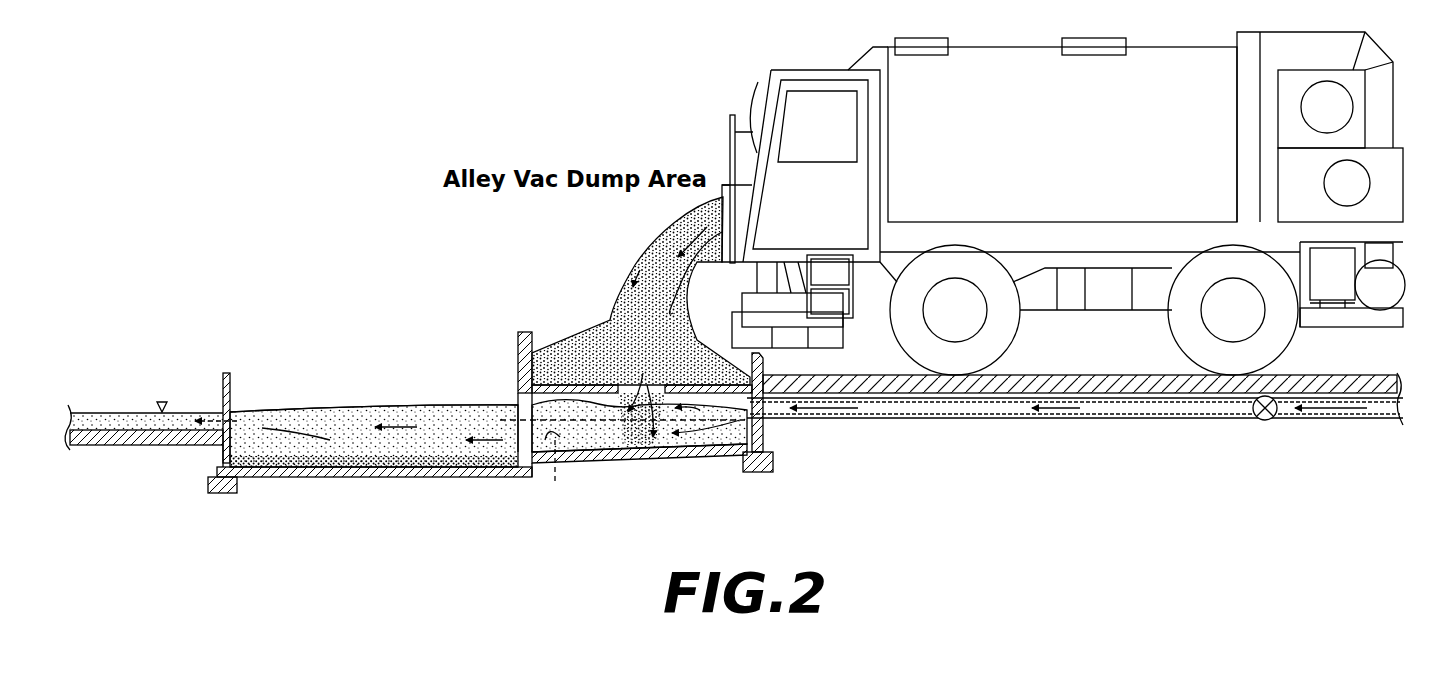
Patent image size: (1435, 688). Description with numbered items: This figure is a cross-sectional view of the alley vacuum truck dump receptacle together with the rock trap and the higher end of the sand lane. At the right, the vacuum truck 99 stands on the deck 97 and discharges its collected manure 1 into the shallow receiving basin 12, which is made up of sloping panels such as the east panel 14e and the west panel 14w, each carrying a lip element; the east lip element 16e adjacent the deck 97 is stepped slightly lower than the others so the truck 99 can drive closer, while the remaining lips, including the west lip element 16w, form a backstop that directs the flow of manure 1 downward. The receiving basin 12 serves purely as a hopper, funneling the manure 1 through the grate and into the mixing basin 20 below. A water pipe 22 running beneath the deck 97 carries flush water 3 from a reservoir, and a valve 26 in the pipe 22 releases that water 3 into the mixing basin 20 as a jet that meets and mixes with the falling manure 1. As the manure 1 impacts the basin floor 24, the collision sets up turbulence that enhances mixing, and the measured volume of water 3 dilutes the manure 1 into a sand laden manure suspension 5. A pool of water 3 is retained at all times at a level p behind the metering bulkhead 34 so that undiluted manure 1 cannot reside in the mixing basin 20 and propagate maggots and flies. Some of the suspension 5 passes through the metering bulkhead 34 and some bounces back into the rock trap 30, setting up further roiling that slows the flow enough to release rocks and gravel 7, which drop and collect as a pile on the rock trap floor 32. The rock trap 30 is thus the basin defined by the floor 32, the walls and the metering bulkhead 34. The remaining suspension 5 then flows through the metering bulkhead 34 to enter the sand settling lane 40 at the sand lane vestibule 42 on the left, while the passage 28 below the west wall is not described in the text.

The manure 1 is at (643, 257).
The water 3 is at (1065, 408).
The sand laden manure suspension 5 is at (555, 483).
The gravel 7 is at (297, 462).
The receiving basin 12 is at (570, 312).
The sloping panel 14e is at (703, 385).
The sloping panel 14w is at (530, 386).
The lip element 16e is at (763, 360).
The lip element 16w is at (525, 332).
The mixing basin 20 is at (633, 462).
The water pipe 22 is at (947, 408).
The basin floor 24 is at (682, 460).
The valve 26 is at (1270, 420).
The opening in west wall 28 is at (523, 403).
The rock trap 30 is at (383, 385).
The rock trap floor 32 is at (270, 477).
The metering bulkhead 34 is at (227, 373).
The sand settling lane 40 is at (138, 397).
The sand lane vestibule 42 is at (165, 440).
The deck 97 is at (1148, 375).
The vacuum truck 99 is at (1093, 155).
The level p is at (353, 410).